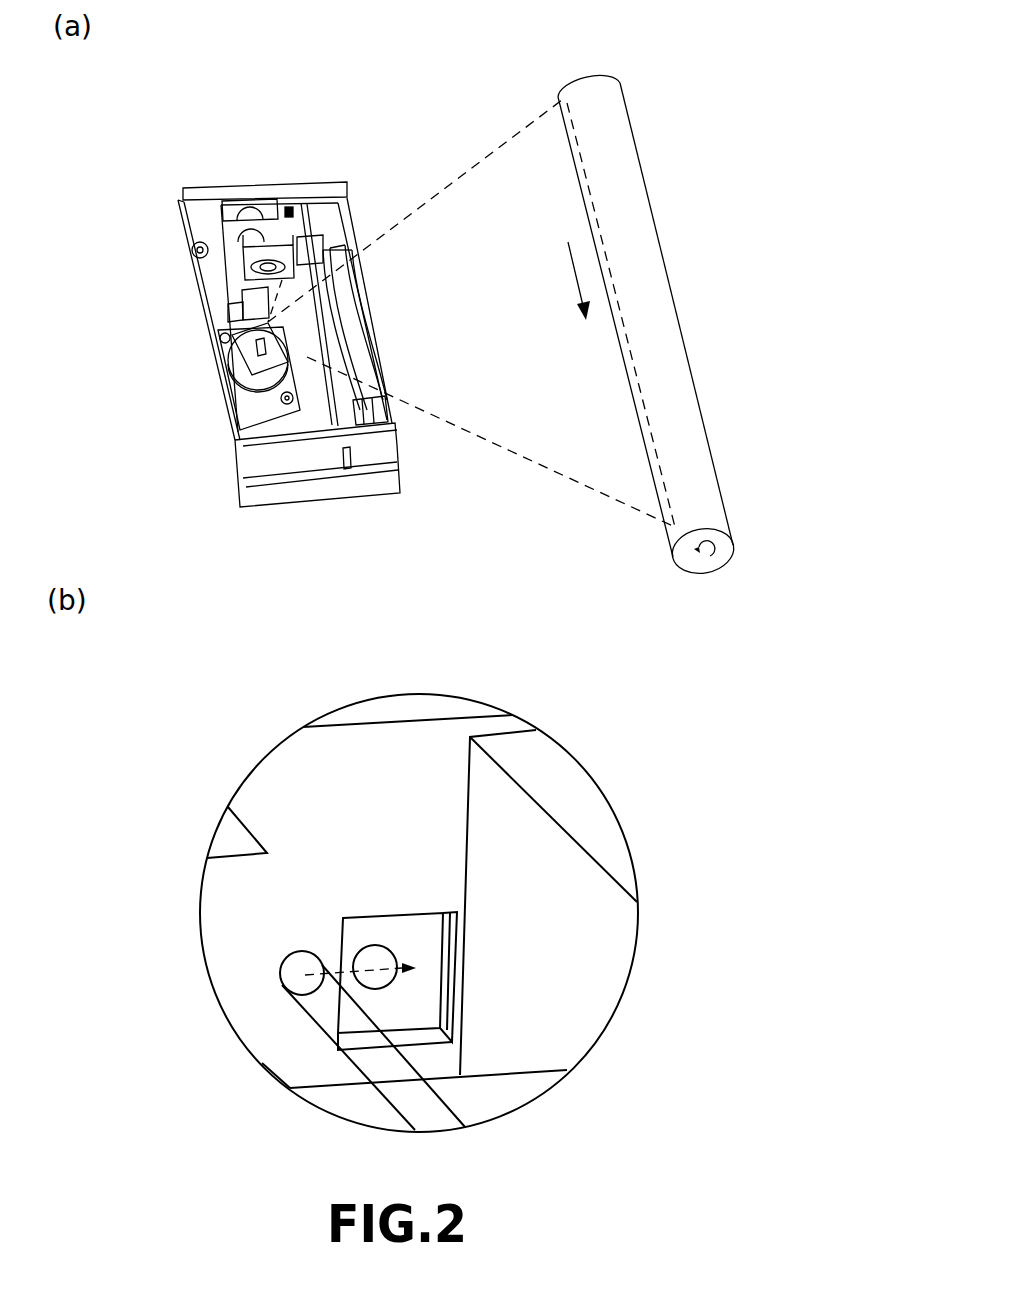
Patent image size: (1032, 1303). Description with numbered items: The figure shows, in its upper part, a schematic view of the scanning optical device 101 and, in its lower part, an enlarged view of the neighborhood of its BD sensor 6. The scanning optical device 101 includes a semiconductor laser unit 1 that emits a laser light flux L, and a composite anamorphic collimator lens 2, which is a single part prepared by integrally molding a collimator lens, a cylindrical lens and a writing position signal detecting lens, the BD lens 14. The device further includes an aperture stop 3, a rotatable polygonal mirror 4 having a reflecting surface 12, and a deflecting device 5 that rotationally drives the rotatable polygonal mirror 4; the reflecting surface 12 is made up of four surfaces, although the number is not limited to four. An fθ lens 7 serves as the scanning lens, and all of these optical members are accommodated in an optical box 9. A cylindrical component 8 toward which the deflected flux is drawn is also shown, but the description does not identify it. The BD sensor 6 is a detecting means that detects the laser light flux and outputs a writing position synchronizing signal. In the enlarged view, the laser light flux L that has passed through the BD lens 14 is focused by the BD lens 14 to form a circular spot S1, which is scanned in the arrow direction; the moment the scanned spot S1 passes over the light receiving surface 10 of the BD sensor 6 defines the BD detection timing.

The scanning optical device 101 is at (284, 162).
The semiconductor laser unit 1 is at (203, 186).
The composite anamorphic collimator lens 2 is at (238, 248).
The aperture stop 3 is at (240, 296).
The rotatable polygonal mirror 4 is at (255, 345).
The deflecting device 5 is at (247, 403).
The BD sensor 6 is at (300, 205).
The fθ lens 7 is at (393, 405).
The roller 8 is at (590, 80).
The optical box 9 is at (232, 447).
The light receiving surface 10 is at (382, 975).
The reflecting surface 12 is at (237, 352).
The BD lens 14 is at (340, 257).
The laser light flux L is at (242, 272).
The spot S1 is at (290, 953).